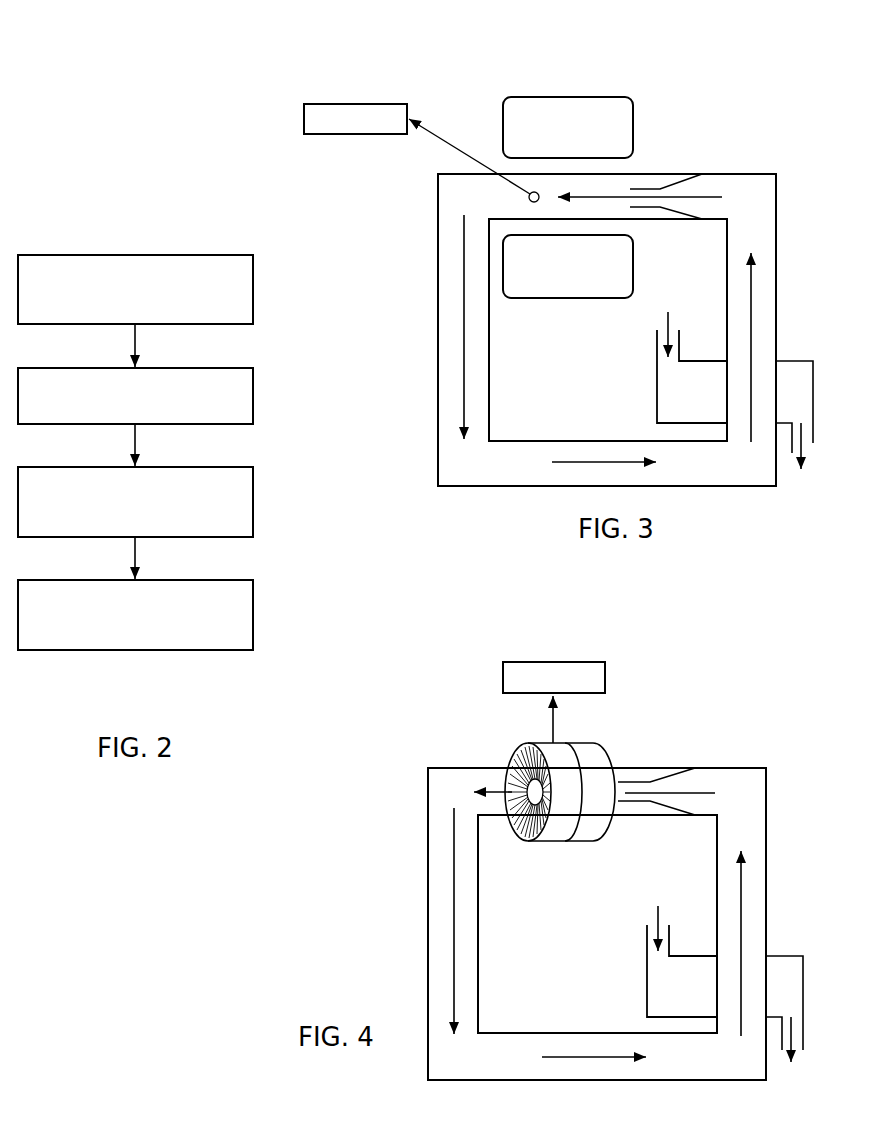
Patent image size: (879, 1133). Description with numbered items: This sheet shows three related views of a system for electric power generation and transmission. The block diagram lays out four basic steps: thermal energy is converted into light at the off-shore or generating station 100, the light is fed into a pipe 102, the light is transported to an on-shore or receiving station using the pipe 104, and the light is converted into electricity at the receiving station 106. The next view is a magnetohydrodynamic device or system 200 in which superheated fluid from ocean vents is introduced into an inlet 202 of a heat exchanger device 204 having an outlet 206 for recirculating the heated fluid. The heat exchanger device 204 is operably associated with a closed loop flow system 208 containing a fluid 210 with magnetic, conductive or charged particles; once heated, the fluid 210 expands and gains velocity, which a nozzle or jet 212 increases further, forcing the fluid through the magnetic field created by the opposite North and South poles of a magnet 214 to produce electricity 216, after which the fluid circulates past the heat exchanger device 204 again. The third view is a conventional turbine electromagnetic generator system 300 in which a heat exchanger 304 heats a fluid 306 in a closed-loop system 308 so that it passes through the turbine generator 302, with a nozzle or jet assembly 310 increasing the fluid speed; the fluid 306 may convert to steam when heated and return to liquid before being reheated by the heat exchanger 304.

In FIG. 2, the converting thermal energy into light step 100 is at (247, 315).
In FIG. 2, the feeding light into pipe step 102 is at (247, 416).
In FIG. 2, the transporting light step 104 is at (247, 528).
In FIG. 2, the converting light into electricity step 106 is at (247, 641).
In FIG. 3, the magnetohydrodynamic device 200 is at (701, 91).
In FIG. 3, the inlet 202 is at (657, 335).
In FIG. 3, the heat exchanger device 204 is at (705, 413).
In FIG. 3, the outlet 206 is at (810, 440).
In FIG. 3, the closed loop flow system 208 is at (763, 312).
In FIG. 3, the fluid 210 is at (765, 240).
In FIG. 3, the nozzle or jet 212 is at (655, 189).
In FIG. 3, the magnet 214 is at (535, 108).
In FIG. 3, the electricity 216 is at (353, 103).
In FIG. 4, the turbine electromagnetic generator system 300 is at (683, 709).
In FIG. 4, the turbine generator 302 is at (538, 745).
In FIG. 4, the heat exchanger 304 is at (697, 1009).
In FIG. 4, the fluid 306 is at (742, 933).
In FIG. 4, the closed-loop system 308 is at (759, 813).
In FIG. 4, the nozzle or jet assembly 310 is at (650, 782).